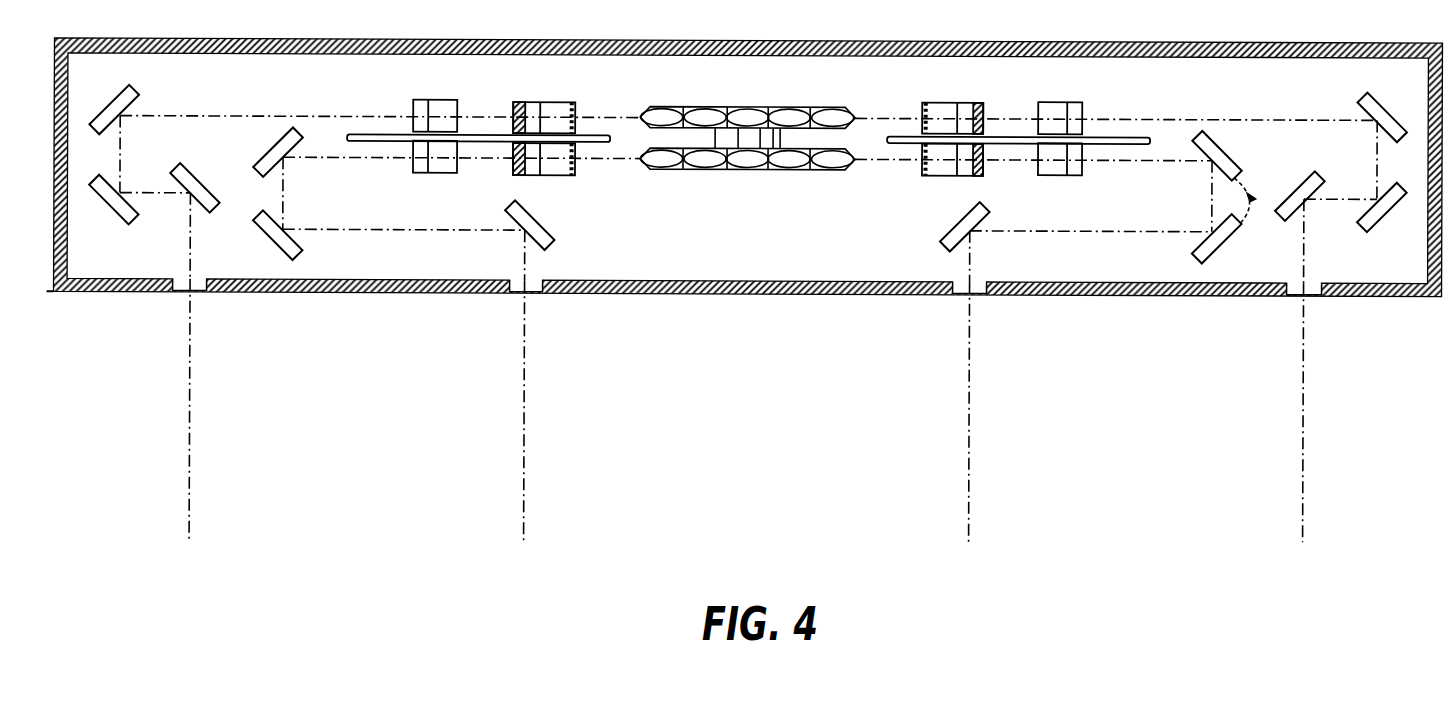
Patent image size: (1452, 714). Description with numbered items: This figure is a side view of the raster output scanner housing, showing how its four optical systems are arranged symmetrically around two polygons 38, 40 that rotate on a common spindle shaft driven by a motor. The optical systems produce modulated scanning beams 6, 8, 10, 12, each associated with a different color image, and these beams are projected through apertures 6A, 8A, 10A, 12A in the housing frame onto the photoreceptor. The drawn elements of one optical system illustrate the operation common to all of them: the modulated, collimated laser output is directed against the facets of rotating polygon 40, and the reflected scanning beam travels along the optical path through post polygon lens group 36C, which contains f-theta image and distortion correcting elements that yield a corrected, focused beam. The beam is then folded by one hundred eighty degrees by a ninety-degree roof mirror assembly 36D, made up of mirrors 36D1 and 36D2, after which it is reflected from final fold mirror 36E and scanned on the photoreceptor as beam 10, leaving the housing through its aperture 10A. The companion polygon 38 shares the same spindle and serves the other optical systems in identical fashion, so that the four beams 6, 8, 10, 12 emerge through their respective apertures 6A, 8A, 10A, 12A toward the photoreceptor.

The modulated scanning beam 6 is at (193, 442).
The aperture 6A is at (197, 286).
The modulated scanning beam 8 is at (527, 441).
The aperture 8A is at (535, 285).
The modulated scanning beam 10 is at (972, 439).
The aperture 10A is at (985, 284).
The modulated scanning beam 12 is at (1307, 438).
The aperture 12A is at (1320, 283).
The post polygon lens group 36C is at (963, 167).
The roof mirror assembly 36D is at (1207, 210).
The mirror 36D1 is at (1202, 145).
The mirror 36D2 is at (1225, 240).
The final fold mirror 36E is at (963, 225).
The polygon 38 is at (745, 107).
The polygon 40 is at (747, 170).